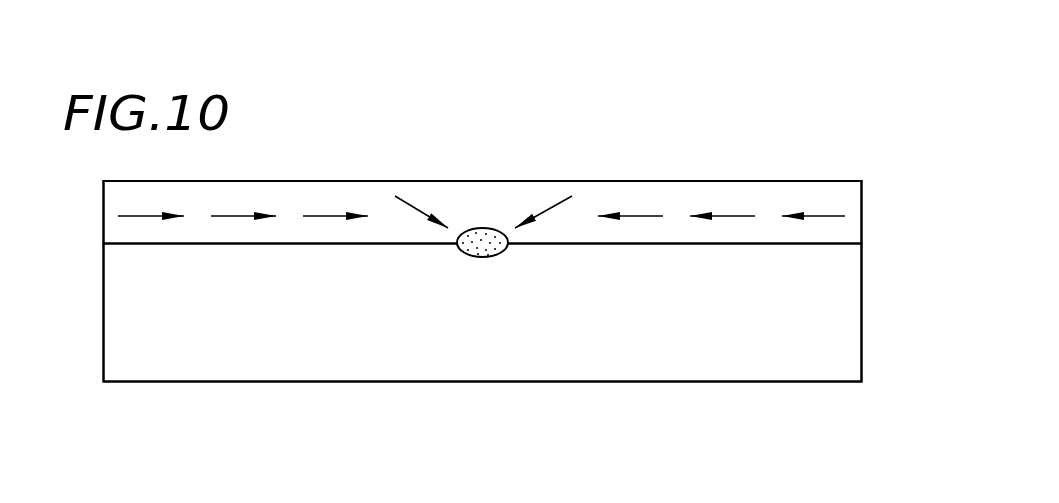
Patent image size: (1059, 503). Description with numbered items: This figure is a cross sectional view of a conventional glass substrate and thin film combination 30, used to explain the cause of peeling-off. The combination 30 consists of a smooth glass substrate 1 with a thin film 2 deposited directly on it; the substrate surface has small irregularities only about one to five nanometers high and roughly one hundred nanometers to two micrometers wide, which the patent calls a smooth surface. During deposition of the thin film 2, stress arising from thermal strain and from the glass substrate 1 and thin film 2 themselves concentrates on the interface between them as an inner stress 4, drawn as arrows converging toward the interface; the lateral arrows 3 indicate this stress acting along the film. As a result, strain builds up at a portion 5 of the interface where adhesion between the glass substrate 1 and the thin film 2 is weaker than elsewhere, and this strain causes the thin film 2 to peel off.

The glass substrate and thin film combination 30 is at (868, 113).
The glass substrate 1 is at (823, 333).
The thin film 2 is at (845, 234).
The lateral stress / flow arrows 3 is at (830, 214).
The inner stress 4 is at (568, 199).
The portion 5 is at (480, 258).